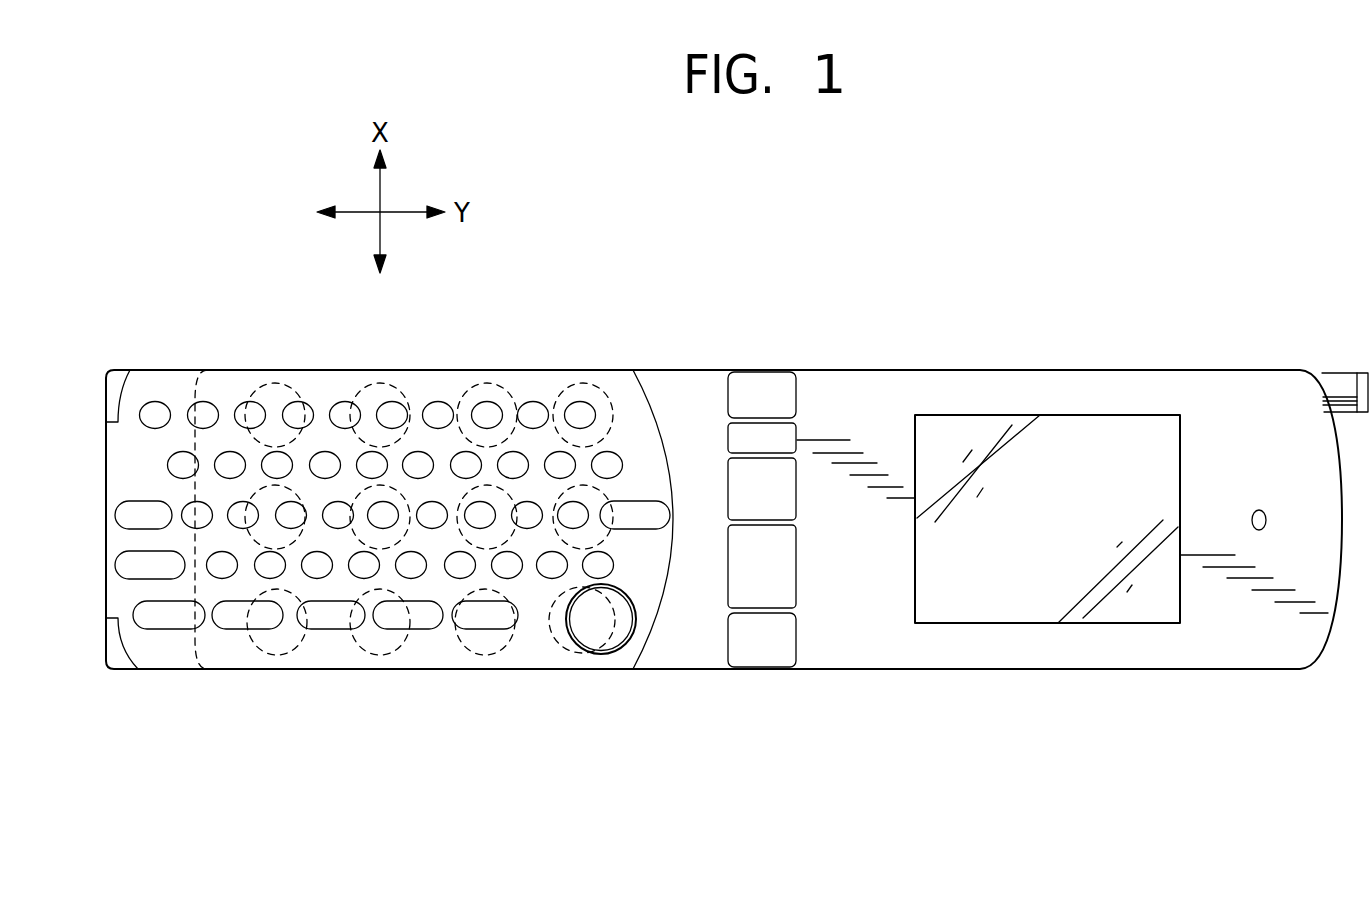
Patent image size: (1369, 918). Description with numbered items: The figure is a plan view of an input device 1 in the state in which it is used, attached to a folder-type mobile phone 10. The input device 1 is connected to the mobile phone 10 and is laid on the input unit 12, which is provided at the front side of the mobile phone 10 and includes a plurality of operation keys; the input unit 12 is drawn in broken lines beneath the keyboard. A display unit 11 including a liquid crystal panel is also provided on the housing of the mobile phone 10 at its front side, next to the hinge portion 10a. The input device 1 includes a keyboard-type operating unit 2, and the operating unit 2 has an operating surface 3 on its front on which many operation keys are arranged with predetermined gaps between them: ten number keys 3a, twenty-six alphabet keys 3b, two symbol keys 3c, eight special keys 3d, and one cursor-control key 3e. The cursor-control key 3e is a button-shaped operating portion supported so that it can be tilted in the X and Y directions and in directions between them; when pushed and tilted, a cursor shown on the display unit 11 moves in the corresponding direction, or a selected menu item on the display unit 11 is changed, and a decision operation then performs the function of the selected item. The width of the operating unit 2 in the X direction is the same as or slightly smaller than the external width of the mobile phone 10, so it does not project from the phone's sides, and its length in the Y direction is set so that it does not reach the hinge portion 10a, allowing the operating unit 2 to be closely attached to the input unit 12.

The input device 1 is at (538, 362).
The operating unit 2 is at (172, 654).
The operating surface 3 is at (376, 527).
The number keys 3a is at (151, 400).
The alphabet keys 3b is at (622, 462).
The symbol keys 3c is at (614, 568).
The special keys 3d is at (142, 590).
The cursor-control key 3e is at (590, 625).
The mobile phone 10 is at (1058, 360).
The hinge portion 10a is at (767, 638).
The display unit 11 is at (1033, 605).
The input unit 12 is at (401, 664).